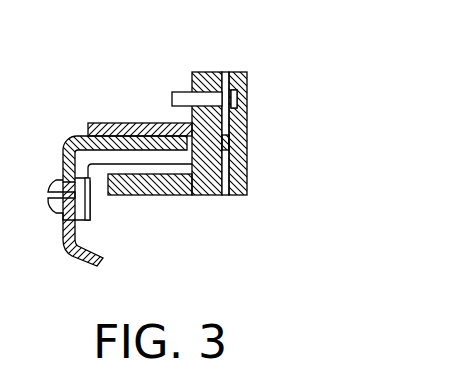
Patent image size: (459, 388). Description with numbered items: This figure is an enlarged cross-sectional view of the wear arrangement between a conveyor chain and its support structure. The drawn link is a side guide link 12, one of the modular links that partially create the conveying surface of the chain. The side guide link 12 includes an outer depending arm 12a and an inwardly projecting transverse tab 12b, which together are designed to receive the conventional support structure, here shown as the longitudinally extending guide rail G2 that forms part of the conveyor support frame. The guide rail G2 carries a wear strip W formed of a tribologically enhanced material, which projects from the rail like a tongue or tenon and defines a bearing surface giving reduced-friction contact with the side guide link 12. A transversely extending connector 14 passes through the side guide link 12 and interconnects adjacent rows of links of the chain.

The side guide link 12 is at (243, 74).
The outer depending arm 12a is at (247, 182).
The transverse tab 12b is at (170, 196).
The connector 14 is at (172, 96).
The wear strip W is at (247, 145).
The guide rail G2 is at (82, 255).